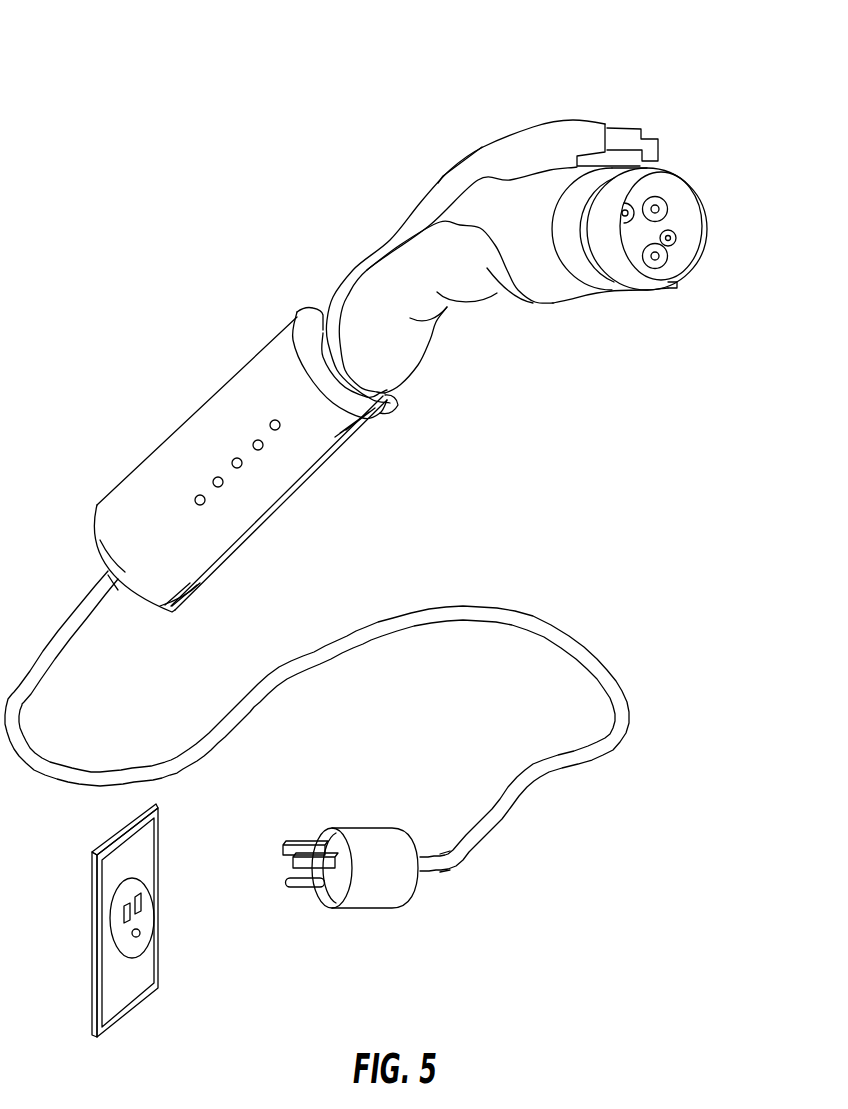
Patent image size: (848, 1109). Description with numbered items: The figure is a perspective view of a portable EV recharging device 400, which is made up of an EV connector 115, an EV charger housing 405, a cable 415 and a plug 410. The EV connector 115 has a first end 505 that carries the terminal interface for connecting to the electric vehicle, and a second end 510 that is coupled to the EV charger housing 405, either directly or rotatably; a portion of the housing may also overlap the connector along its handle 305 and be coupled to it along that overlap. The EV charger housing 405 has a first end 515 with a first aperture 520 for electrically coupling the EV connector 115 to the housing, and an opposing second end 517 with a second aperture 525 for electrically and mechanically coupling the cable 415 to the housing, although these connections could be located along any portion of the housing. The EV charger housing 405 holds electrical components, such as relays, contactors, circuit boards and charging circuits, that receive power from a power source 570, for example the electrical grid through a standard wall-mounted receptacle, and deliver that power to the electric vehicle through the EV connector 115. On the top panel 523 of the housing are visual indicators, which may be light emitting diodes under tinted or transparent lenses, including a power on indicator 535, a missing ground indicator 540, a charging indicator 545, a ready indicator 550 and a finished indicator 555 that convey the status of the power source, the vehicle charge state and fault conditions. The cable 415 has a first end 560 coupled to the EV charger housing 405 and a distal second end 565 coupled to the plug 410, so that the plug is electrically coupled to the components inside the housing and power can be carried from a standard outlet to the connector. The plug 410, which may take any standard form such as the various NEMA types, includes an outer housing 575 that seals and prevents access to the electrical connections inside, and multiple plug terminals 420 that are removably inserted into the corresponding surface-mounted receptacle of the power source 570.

The portable EV recharging device 400 is at (137, 70).
The EV connector 115 is at (528, 127).
The handle 305 is at (430, 347).
The first end 505 is at (718, 208).
The second end 510 is at (303, 317).
The first aperture 520 is at (320, 367).
The first end 515 is at (376, 407).
The EV charger housing 405 is at (247, 361).
The top panel 523 is at (113, 517).
The second aperture 525 is at (117, 570).
The second end 517 is at (187, 591).
The first end 560 is at (117, 592).
The power on indicator 535 is at (270, 425).
The missing ground indicator 540 is at (263, 447).
The charging indicator 545 is at (232, 463).
The ready indicator 550 is at (223, 484).
The finished indicator 555 is at (195, 500).
The cable 415 is at (487, 607).
The second end 565 is at (420, 877).
The outer housing 575 is at (379, 836).
The plug 410 is at (310, 873).
The plug terminals 420 is at (290, 866).
The power source 570 is at (92, 885).